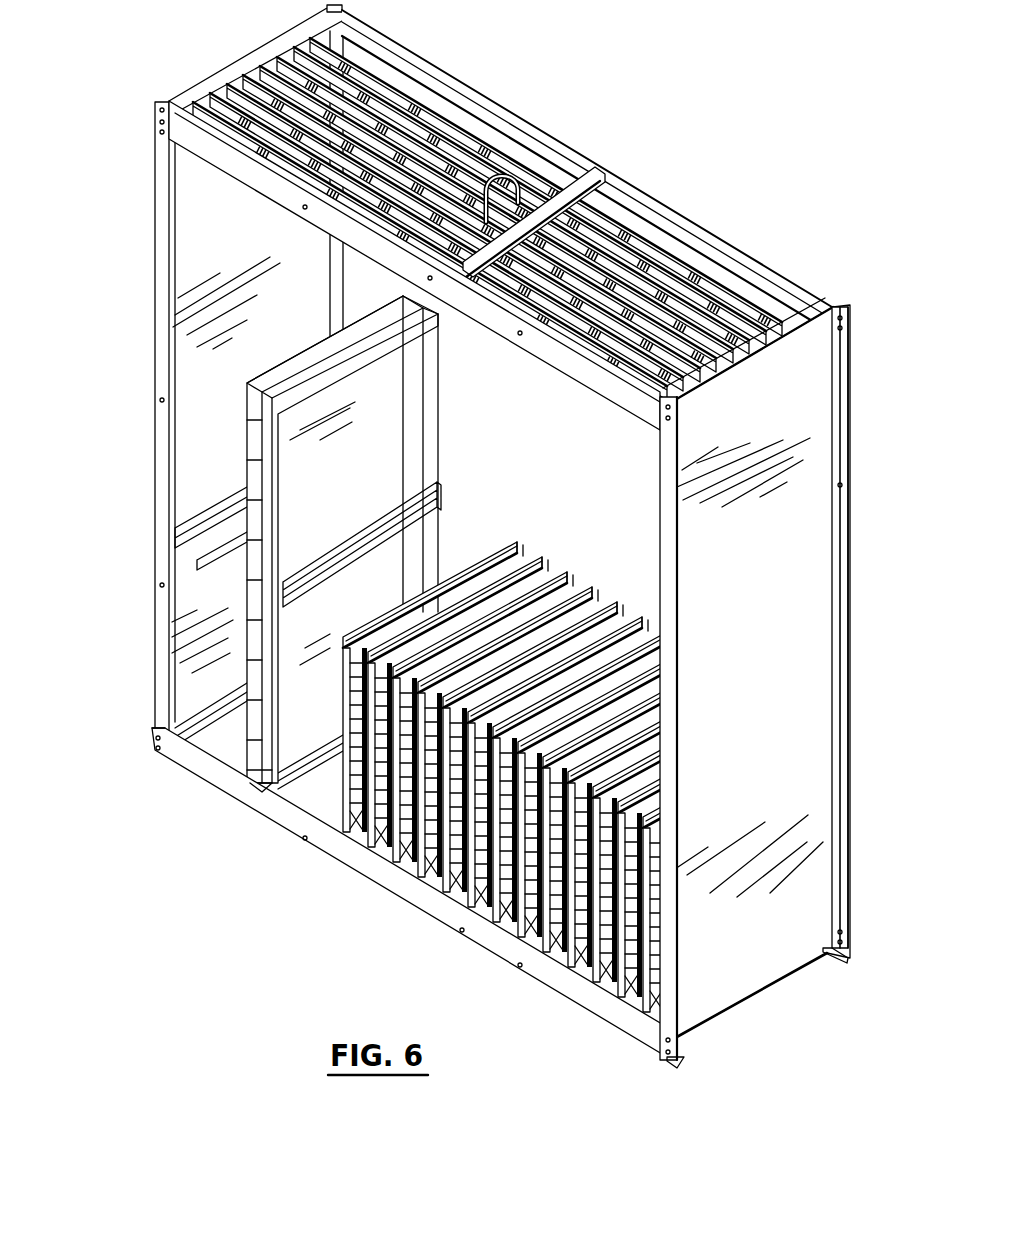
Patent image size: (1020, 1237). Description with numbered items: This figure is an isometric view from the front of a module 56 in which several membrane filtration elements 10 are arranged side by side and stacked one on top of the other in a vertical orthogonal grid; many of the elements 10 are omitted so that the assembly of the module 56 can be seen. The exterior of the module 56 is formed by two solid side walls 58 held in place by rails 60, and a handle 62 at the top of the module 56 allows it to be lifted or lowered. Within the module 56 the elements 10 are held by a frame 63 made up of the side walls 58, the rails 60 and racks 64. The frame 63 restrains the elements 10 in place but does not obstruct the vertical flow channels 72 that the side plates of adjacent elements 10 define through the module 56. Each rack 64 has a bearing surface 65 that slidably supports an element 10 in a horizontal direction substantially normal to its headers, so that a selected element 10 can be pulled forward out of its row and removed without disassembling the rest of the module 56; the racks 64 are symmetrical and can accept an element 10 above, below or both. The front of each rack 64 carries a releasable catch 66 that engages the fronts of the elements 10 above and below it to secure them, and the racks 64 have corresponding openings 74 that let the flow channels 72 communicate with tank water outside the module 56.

The element 10 is at (592, 570).
The module 56 is at (868, 522).
The side walls 58 is at (154, 455).
The rails 60 is at (773, 264).
The handle 62 is at (568, 170).
The frame 63 is at (133, 691).
The racks 64 is at (687, 252).
The bearing surface 65 is at (152, 743).
The releasable catch 66 is at (177, 545).
The vertical flow channels 72 is at (320, 357).
The openings 74 is at (273, 789).